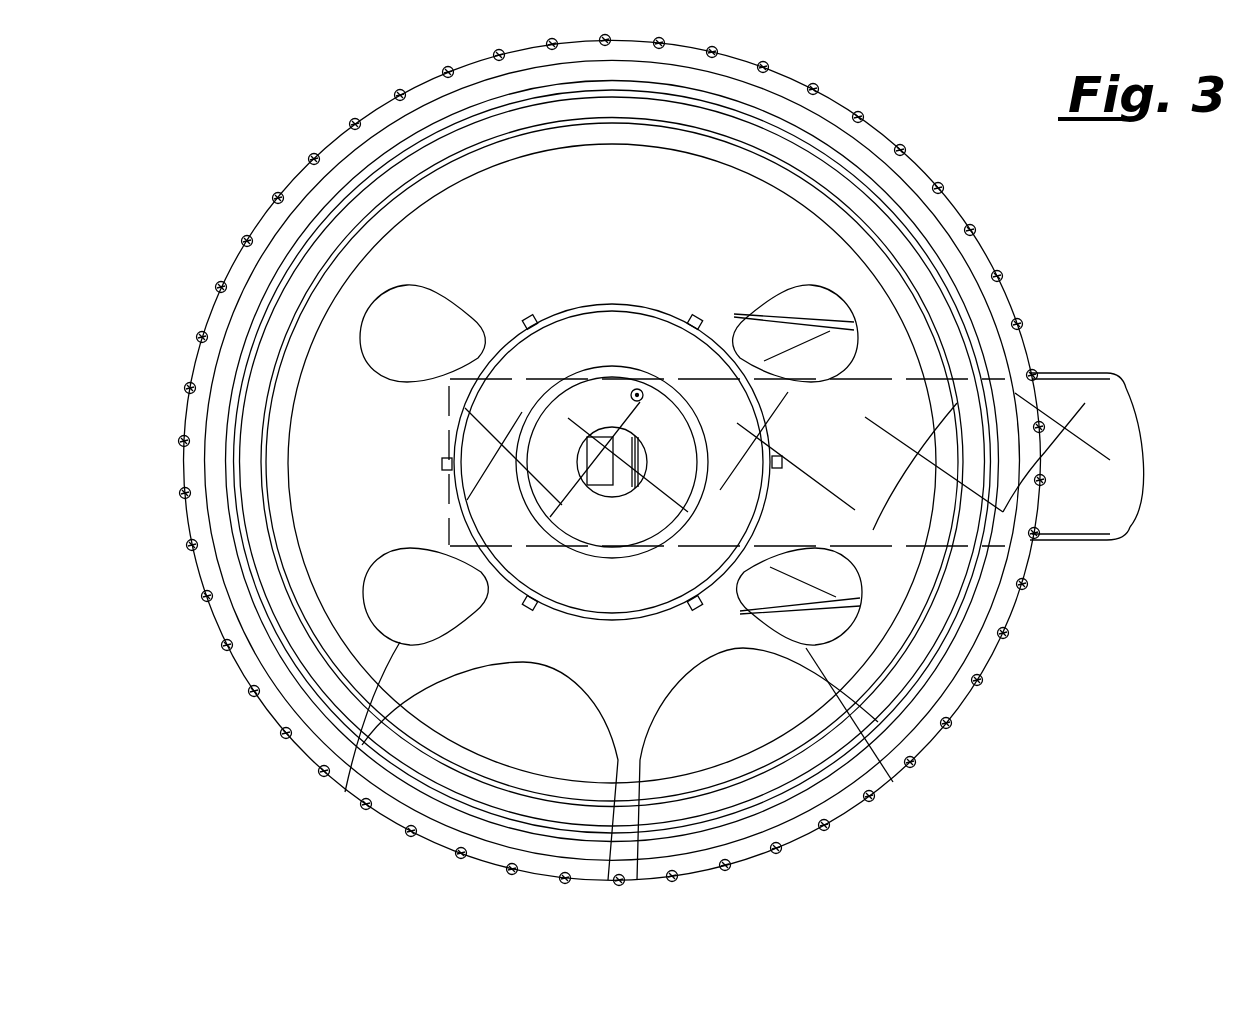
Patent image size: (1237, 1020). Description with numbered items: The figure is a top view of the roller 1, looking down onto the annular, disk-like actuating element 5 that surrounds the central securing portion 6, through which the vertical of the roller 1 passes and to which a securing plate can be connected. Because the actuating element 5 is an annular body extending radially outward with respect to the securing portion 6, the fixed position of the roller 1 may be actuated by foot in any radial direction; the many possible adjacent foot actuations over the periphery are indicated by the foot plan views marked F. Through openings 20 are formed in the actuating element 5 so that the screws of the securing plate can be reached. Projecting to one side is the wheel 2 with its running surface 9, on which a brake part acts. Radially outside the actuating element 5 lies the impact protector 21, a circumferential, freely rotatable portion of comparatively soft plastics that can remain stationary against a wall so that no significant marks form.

The roller 1 is at (272, 160).
The wheel 2 is at (1072, 371).
The actuating element 5 is at (725, 185).
The securing portion 6 is at (470, 462).
The running surface 9 is at (1115, 420).
The through openings 20 is at (360, 345).
The impact protector 21 is at (1003, 618).